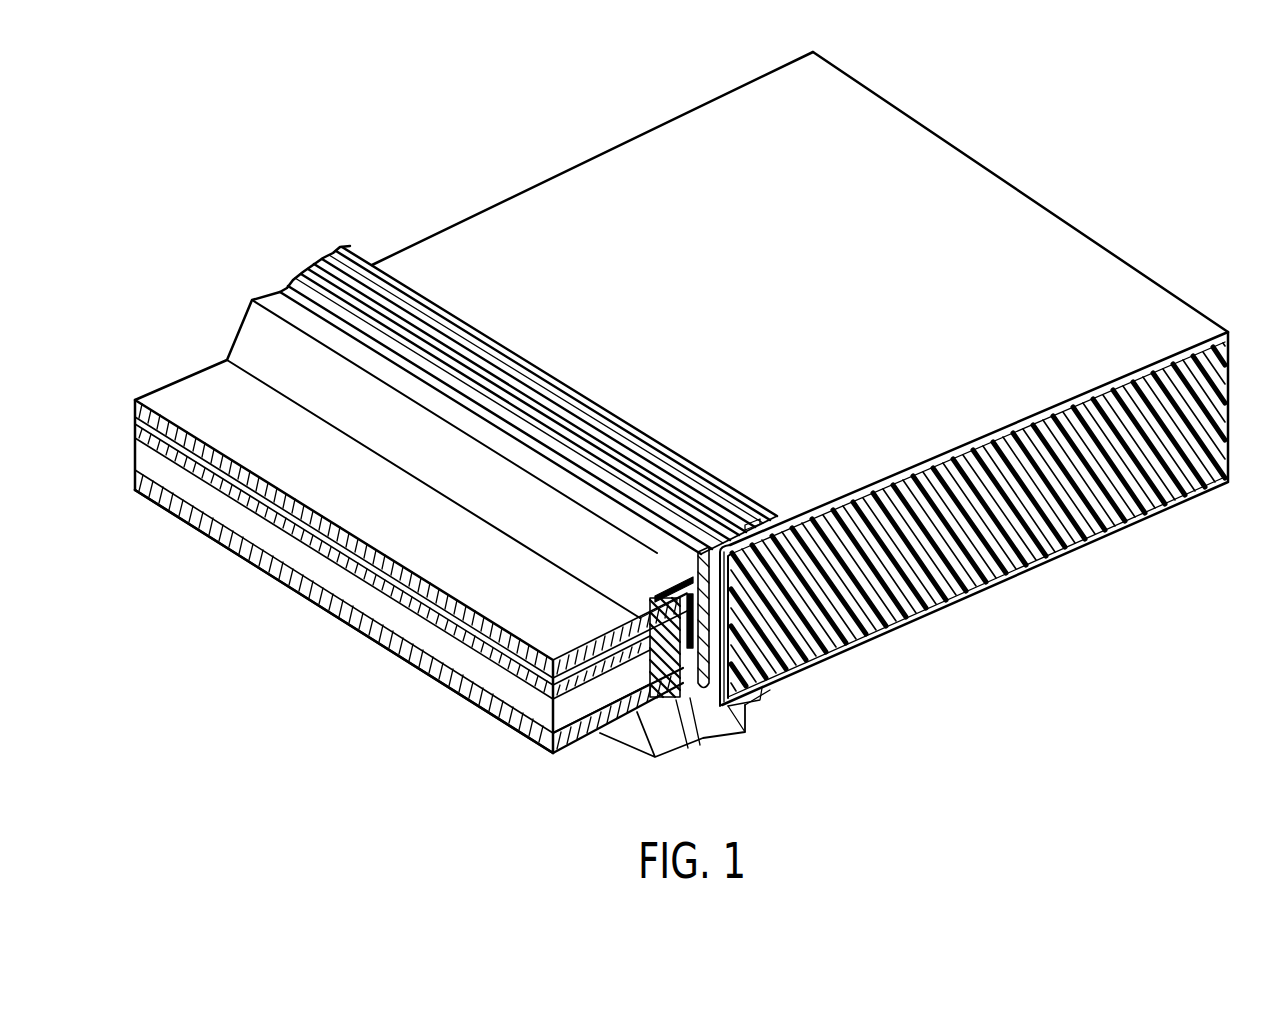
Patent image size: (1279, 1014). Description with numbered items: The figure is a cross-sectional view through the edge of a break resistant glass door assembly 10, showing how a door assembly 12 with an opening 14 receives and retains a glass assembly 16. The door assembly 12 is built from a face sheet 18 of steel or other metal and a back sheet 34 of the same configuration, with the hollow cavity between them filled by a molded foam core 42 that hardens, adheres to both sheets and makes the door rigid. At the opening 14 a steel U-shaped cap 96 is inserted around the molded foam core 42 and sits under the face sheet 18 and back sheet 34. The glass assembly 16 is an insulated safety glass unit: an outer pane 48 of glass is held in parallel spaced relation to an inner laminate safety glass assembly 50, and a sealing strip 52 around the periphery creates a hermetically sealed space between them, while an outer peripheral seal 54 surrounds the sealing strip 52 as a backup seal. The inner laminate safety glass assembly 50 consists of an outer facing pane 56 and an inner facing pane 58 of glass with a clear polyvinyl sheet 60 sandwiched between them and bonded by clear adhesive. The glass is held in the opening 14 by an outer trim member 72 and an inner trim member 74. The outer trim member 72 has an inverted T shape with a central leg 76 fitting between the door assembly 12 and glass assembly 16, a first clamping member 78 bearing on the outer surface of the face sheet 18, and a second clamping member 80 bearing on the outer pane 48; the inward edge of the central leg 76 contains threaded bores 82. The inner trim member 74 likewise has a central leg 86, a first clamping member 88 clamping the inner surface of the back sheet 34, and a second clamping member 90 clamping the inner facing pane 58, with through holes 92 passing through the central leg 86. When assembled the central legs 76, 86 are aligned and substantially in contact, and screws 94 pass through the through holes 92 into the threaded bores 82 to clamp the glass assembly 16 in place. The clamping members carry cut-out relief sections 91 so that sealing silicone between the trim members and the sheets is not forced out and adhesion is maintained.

The break resistant glass door assembly 10 is at (383, 211).
The door assembly 12 is at (659, 119).
The opening 14 is at (690, 745).
The glass assembly 16 is at (390, 651).
The face sheet 18 is at (930, 617).
The back sheet 34 is at (1032, 218).
The molded foam core 42 is at (1068, 527).
The outer pane 48 is at (447, 692).
The inner laminate safety glass assembly 50 is at (139, 392).
The sealing strip 52 is at (640, 688).
The outer peripheral seal 54 is at (675, 745).
The outer facing pane 56 is at (280, 526).
The inner facing pane 58 is at (243, 503).
The clear polyvinyl sheet 60 is at (337, 560).
The outer trim member 72 is at (757, 700).
The inner trim member 74 is at (703, 458).
The central leg 76 is at (732, 605).
The first clamping member 78 is at (742, 728).
The second clamping member 80 is at (652, 755).
The threaded bores 82 is at (760, 690).
The central leg 86 is at (800, 563).
The first clamping member 88 is at (740, 526).
The second clamping member 90 is at (568, 565).
The cut-out relief sections 91 is at (656, 612).
The through holes 92 is at (670, 596).
The screws 94 is at (741, 508).
The U-shaped cap 96 is at (807, 623).